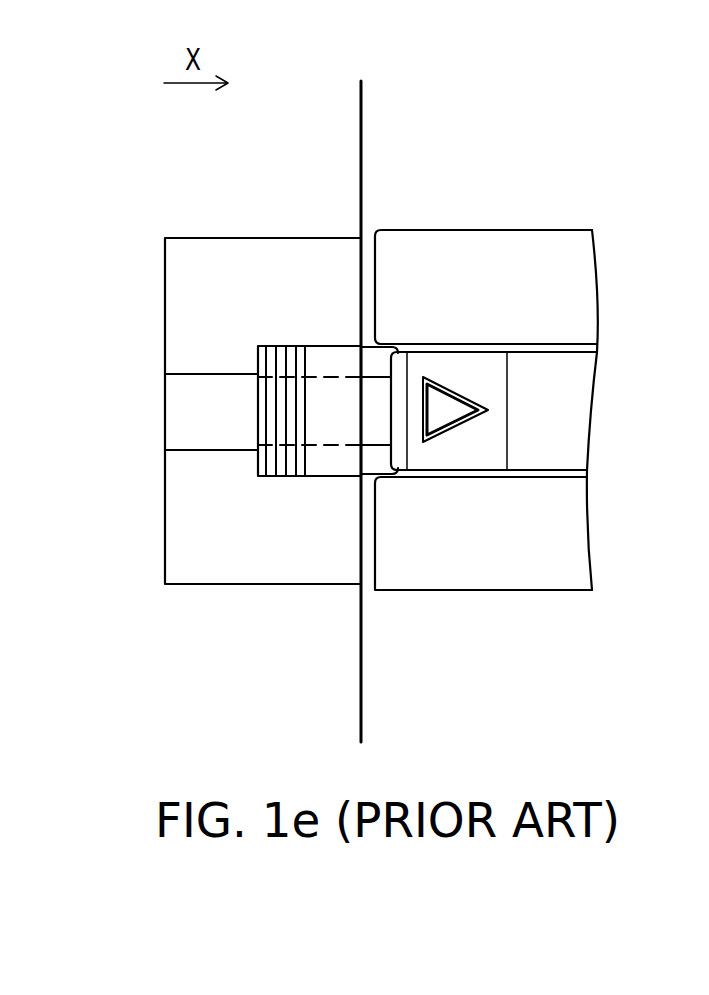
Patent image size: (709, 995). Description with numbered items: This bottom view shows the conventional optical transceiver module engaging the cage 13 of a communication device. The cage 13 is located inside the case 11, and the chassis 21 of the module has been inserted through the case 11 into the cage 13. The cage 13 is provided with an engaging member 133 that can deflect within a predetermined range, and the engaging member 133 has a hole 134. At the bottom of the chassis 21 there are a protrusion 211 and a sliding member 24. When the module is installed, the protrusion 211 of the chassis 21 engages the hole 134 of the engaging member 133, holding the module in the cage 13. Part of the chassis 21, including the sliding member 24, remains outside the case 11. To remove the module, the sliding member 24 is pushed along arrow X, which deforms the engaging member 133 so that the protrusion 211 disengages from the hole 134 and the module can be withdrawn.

The case 11 is at (361, 162).
The cage 13 is at (435, 252).
The engaging member 133 is at (552, 367).
The hole 134 is at (488, 412).
The chassis 21 is at (153, 420).
The protrusion 211 is at (445, 417).
The sliding member 24 is at (330, 467).